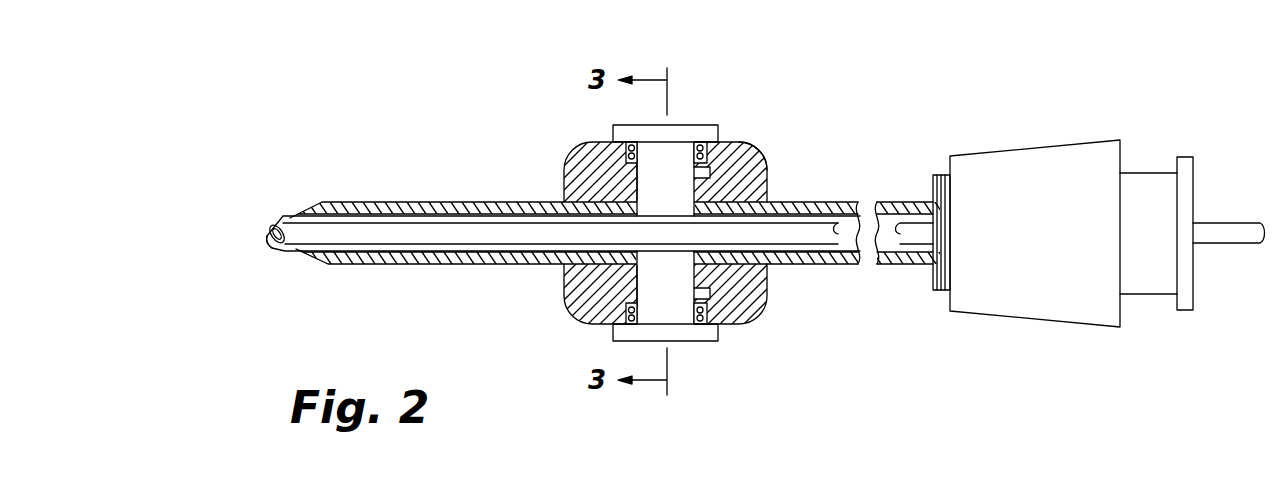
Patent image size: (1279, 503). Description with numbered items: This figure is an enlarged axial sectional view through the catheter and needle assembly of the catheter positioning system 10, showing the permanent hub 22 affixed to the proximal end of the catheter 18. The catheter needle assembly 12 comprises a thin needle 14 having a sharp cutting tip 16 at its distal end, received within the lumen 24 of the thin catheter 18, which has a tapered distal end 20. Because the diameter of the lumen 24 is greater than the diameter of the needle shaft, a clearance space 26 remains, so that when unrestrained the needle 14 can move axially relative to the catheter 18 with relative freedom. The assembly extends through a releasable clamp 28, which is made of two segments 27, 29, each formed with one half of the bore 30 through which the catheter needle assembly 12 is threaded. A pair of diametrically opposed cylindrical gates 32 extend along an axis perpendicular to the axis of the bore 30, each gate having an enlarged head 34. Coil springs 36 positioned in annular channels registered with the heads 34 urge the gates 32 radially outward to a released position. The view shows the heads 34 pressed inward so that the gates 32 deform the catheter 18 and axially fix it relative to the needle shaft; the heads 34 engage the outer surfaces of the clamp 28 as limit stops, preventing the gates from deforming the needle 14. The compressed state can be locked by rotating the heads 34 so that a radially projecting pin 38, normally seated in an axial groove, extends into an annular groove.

The catheter positioning system 10 is at (440, 82).
The catheter needle assembly 12 is at (452, 186).
The needle 14 is at (498, 244).
The sharp cutting tip 16 is at (268, 246).
The catheter 18 is at (395, 264).
The tapered distal end 20 is at (297, 216).
The permanent hub 22 is at (1005, 150).
The lumen 24 is at (790, 247).
The clearance space 26 is at (400, 202).
The segment 27 is at (566, 183).
The releasable clamp 28 is at (758, 150).
The segment 29 is at (632, 302).
The bore 30 is at (647, 294).
The cylindrical gate 32 is at (630, 175).
The enlarged head 34 is at (700, 132).
The coil spring 36 is at (710, 158).
The radially projecting pin 38 is at (712, 173).